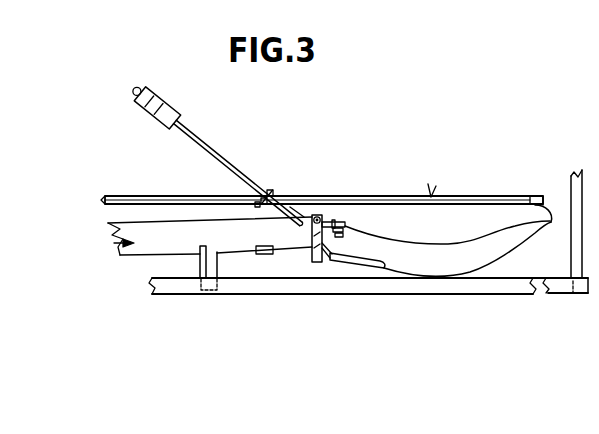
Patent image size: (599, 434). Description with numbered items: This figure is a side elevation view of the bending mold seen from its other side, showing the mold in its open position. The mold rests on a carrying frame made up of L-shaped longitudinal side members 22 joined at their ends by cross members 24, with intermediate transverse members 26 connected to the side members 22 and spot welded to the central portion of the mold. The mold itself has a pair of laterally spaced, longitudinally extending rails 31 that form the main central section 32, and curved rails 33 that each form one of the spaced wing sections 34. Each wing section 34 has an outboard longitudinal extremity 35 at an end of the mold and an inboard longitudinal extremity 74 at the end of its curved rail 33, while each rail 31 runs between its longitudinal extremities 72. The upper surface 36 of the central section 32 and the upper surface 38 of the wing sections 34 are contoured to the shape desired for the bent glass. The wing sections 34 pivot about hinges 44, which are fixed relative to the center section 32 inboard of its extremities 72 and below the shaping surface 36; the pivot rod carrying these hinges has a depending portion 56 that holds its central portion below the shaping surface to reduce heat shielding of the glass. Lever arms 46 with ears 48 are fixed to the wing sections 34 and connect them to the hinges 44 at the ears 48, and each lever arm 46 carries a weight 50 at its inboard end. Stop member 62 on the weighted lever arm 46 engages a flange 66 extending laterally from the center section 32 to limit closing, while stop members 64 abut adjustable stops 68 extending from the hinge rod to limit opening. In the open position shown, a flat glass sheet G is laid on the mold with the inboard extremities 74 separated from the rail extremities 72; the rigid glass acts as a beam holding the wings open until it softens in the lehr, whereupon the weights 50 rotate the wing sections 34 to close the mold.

The longitudinal side member 22 is at (551, 293).
The cross member 24 is at (572, 294).
The intermediate transverse member 26 is at (198, 267).
The longitudinally extending rail 31 is at (108, 226).
The main central section 32 is at (114, 247).
The curved rail 33 is at (467, 249).
The wing section 34 is at (508, 246).
The outboard longitudinal extremity 35 is at (532, 195).
The upper surface of main central section 36 is at (138, 222).
The upper surface of wing section 38 is at (448, 244).
The hinge 44 is at (316, 217).
The lever arm 46 is at (337, 264).
The ear 48 is at (303, 216).
The weight 50 is at (165, 84).
The depending portion 56 is at (312, 237).
The stop member 62 is at (263, 196).
The stop member 64 is at (343, 226).
The flange 66 is at (262, 255).
The adjustable stop 68 is at (333, 223).
The longitudinal extremity of rail 72 is at (327, 222).
The inboard longitudinal extremity 74 is at (336, 222).
The glass sheet G is at (430, 180).